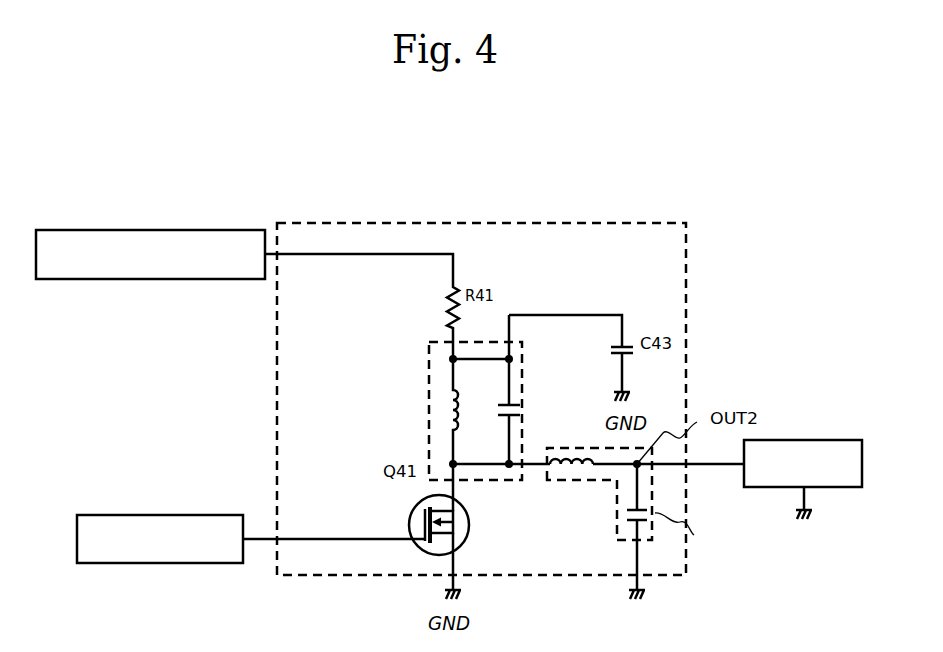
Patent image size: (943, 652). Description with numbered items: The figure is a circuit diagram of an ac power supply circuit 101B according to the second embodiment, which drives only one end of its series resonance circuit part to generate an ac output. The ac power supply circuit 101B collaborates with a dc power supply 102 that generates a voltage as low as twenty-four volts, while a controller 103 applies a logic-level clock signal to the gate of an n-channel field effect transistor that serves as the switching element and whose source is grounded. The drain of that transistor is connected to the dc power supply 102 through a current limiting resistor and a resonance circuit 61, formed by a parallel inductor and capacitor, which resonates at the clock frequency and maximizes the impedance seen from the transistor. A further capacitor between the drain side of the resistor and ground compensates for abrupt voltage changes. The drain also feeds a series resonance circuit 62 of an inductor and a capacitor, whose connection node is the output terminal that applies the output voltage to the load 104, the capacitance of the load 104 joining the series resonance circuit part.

The dc power supply 102 is at (193, 230).
The controller 103 is at (175, 515).
The load 104 is at (793, 440).
The ac power supply circuit 101B is at (592, 223).
The resonance circuit 61 is at (429, 377).
The series resonance circuit 62 is at (568, 482).